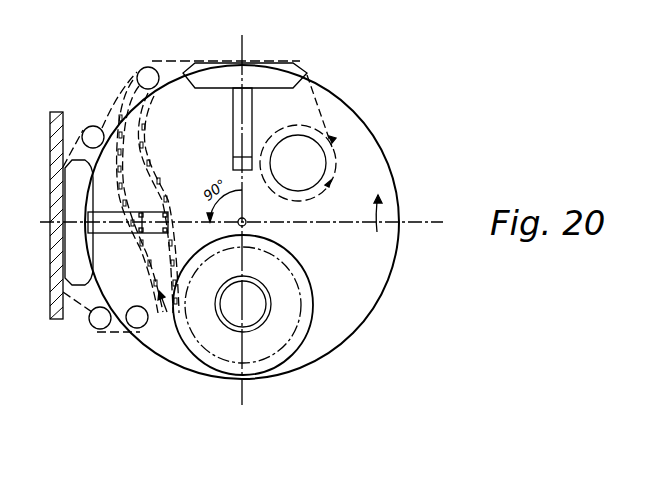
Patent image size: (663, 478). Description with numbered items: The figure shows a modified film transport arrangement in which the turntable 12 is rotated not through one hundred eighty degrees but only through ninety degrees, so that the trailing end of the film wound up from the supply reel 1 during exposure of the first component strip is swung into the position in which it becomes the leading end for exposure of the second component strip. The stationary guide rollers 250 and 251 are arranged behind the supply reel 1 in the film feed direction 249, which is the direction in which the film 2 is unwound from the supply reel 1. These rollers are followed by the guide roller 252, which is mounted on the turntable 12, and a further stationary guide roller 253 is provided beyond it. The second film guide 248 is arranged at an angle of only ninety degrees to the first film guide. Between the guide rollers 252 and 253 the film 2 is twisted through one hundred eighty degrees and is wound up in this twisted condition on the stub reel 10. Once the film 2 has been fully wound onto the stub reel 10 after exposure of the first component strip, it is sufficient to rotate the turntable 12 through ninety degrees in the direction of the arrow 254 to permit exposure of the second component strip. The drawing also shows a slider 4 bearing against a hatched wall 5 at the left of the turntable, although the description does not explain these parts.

The supply reel 1 is at (307, 340).
The film 2 is at (113, 333).
The slider 4 is at (75, 205).
The wall 5 is at (52, 288).
The stub reel 10 is at (310, 172).
The turntable 12 is at (385, 293).
The second film guide 248 is at (272, 70).
The film feed direction 249 is at (161, 319).
The stationary guide roller 250 is at (93, 130).
The stationary guide roller 251 is at (97, 322).
The guide roller 252 is at (137, 322).
The stationary guide roller 253 is at (148, 66).
The arrow 254 is at (380, 208).